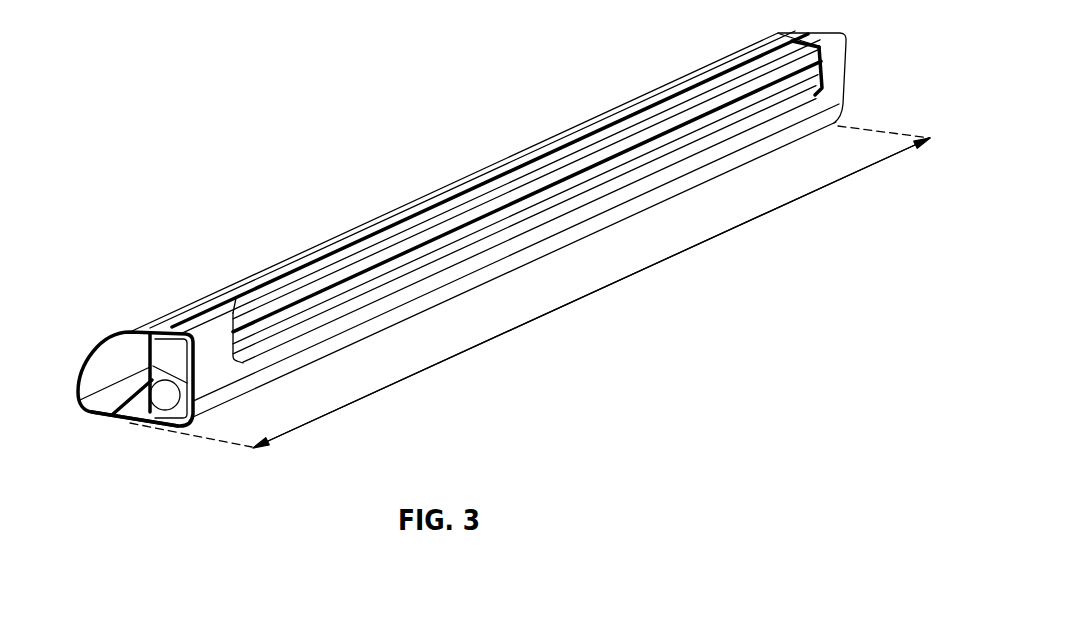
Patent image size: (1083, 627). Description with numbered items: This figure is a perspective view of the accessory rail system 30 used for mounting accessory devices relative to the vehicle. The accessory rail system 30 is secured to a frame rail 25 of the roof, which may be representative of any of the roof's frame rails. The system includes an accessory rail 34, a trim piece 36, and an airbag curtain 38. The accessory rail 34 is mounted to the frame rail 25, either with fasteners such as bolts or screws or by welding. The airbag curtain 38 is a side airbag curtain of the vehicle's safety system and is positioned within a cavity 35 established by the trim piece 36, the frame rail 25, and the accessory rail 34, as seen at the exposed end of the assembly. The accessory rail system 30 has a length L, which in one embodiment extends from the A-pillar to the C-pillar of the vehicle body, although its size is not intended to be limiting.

The accessory rail system 30 is at (95, 207).
The frame rail 25 is at (205, 297).
The accessory rail 34 is at (452, 248).
The cavity 35 is at (167, 347).
The trim piece 36 is at (223, 375).
The airbag curtain 38 is at (167, 405).
The length L is at (587, 293).